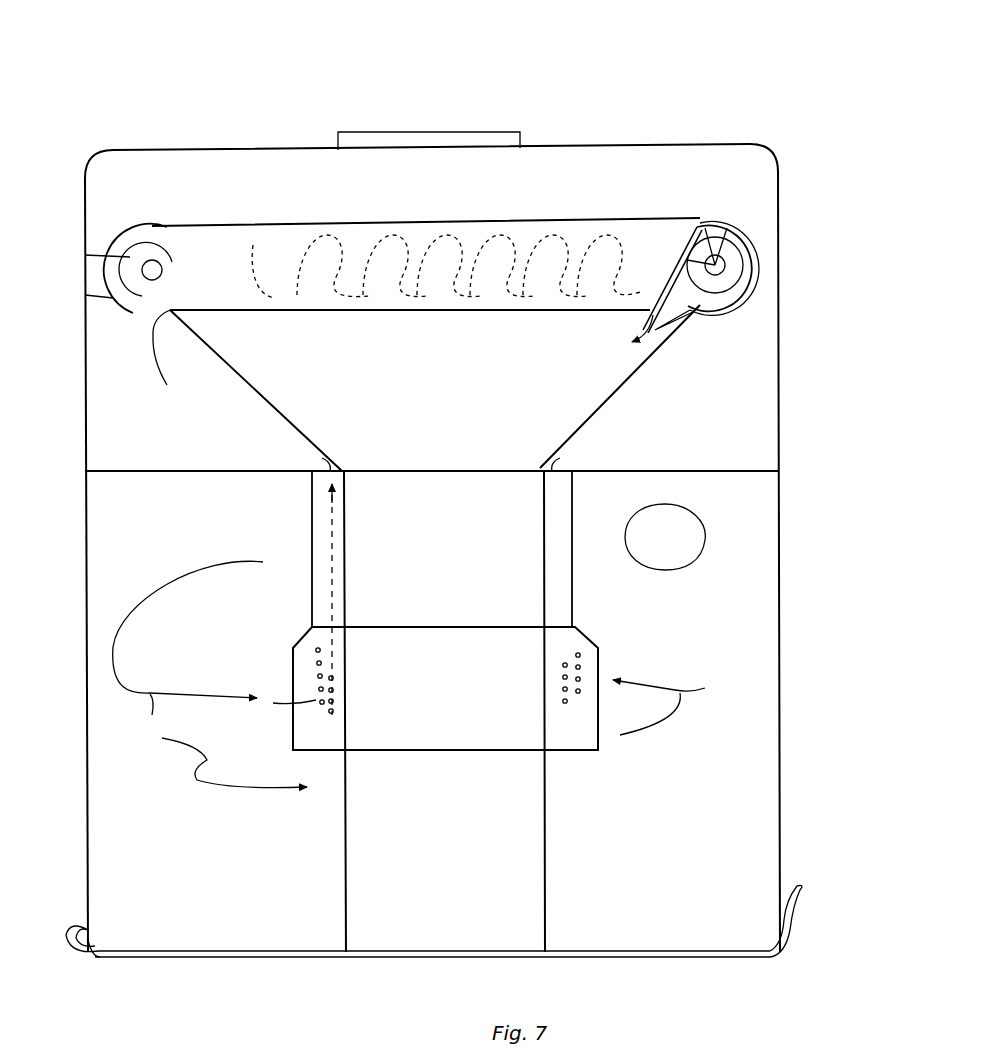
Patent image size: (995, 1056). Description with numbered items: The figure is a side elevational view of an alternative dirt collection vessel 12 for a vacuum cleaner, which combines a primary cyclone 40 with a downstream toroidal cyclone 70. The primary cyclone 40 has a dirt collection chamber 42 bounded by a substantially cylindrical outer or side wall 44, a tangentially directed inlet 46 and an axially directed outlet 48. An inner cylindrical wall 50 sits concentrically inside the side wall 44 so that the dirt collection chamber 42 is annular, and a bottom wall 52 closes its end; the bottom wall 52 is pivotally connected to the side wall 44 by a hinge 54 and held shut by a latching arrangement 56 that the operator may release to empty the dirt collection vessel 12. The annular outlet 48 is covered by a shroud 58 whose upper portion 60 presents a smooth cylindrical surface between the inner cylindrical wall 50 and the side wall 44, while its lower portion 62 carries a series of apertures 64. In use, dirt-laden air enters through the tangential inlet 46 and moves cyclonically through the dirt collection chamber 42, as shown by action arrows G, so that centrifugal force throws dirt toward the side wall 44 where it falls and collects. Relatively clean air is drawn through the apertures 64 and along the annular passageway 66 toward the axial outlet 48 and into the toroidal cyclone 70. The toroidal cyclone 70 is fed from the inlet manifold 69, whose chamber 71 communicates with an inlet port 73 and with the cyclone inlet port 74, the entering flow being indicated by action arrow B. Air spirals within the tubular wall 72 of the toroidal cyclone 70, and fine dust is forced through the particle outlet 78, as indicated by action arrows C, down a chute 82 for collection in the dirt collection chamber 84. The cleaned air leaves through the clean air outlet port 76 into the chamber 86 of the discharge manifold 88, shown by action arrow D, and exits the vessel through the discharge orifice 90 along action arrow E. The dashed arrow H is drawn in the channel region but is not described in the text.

The dirt collection vessel 12 is at (745, 90).
The primary cyclone 40 is at (804, 636).
The dirt collection chamber 42 is at (750, 693).
The outer or side wall 44 is at (780, 751).
The tangentially directed inlet 46 is at (705, 532).
The axially directed outlet 48 is at (325, 482).
The inner cylindrical wall 50 is at (346, 825).
The bottom wall 52 is at (288, 960).
The hinge 54 is at (72, 925).
The latching arrangement 56 is at (806, 900).
The shroud 58 is at (300, 645).
The upper portion of the shroud 60 is at (312, 553).
The lower portion of the shroud 62 is at (300, 722).
The apertures 64 is at (316, 690).
The annular passageway 66 is at (320, 585).
The inlet manifold 69 is at (86, 381).
The toroidal cyclone 70 is at (268, 226).
The inlet manifold chamber 71 is at (116, 418).
The wall of the toroidal cyclone 72 is at (712, 314).
The inlet port 73 is at (322, 468).
The inlet port 74 is at (135, 333).
The clean air outlet port 76 is at (740, 236).
The particle outlet 78 is at (652, 332).
The chute 82 is at (595, 418).
The dirt collection chamber 84 is at (448, 788).
The chamber of the discharge manifold 86 is at (648, 165).
The discharge manifold 88 is at (763, 156).
The discharge orifice 90 is at (397, 147).
The action arrow B is at (124, 278).
The action arrows C is at (633, 293).
The action arrow D is at (742, 240).
The action arrow E is at (520, 202).
The action arrows G is at (418, 674).
The flow H is at (345, 598).